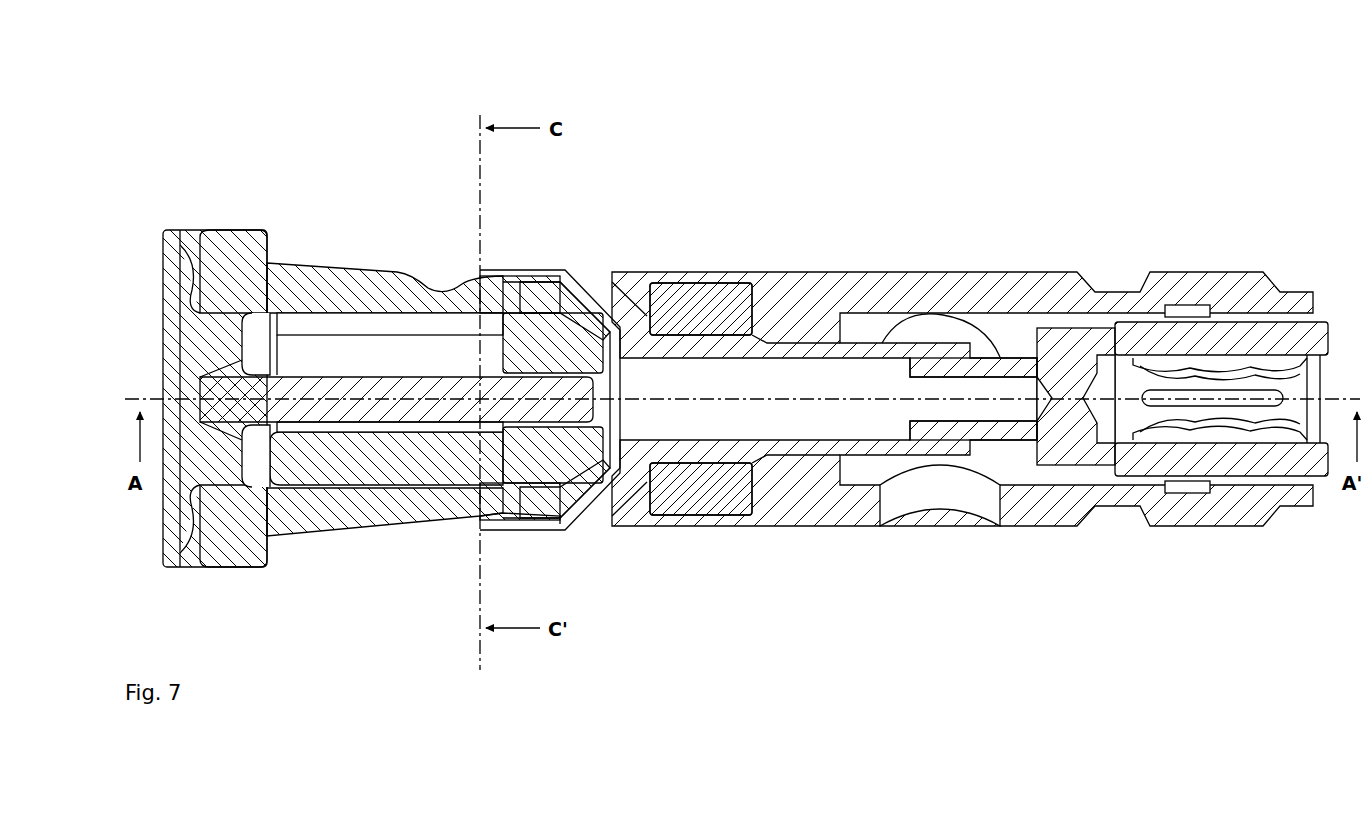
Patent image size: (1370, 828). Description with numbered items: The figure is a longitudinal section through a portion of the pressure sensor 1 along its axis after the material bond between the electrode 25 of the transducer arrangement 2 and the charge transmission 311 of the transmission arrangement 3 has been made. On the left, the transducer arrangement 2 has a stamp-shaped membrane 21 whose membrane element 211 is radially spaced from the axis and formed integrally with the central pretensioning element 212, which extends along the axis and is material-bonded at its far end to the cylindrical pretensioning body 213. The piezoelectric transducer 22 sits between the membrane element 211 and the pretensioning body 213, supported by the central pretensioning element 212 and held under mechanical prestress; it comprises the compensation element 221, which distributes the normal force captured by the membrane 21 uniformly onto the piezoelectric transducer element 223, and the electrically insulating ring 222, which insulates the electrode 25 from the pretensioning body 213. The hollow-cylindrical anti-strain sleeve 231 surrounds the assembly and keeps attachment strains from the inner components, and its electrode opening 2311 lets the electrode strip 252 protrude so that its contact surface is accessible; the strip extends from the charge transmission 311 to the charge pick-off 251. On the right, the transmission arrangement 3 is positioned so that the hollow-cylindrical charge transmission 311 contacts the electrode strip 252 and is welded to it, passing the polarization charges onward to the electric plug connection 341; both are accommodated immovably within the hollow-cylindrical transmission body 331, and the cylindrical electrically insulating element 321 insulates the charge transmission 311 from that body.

The pressure sensor 1 is at (652, 128).
The transducer arrangement 2 is at (421, 158).
The transmission arrangement 3 is at (960, 228).
The membrane 21 is at (327, 250).
The piezoelectric transducer 22 is at (414, 562).
The electrode 25 is at (494, 238).
The membrane element 211 is at (200, 230).
The central pretensioning element 212 is at (388, 396).
The pretensioning body 213 is at (588, 302).
The compensation element 221 is at (255, 470).
The electrically insulating ring 222 is at (490, 522).
The piezoelectric transducer element 223 is at (386, 466).
The anti-strain sleeve 231 is at (240, 228).
The electrode opening 2311 is at (410, 290).
The charge pick-off 251 is at (525, 292).
The electrode strip 252 is at (490, 268).
The charge transmission 311 is at (628, 282).
The electrically insulating element 321 is at (720, 300).
The transmission body 331 is at (1098, 292).
The electric plug connection 341 is at (1318, 336).